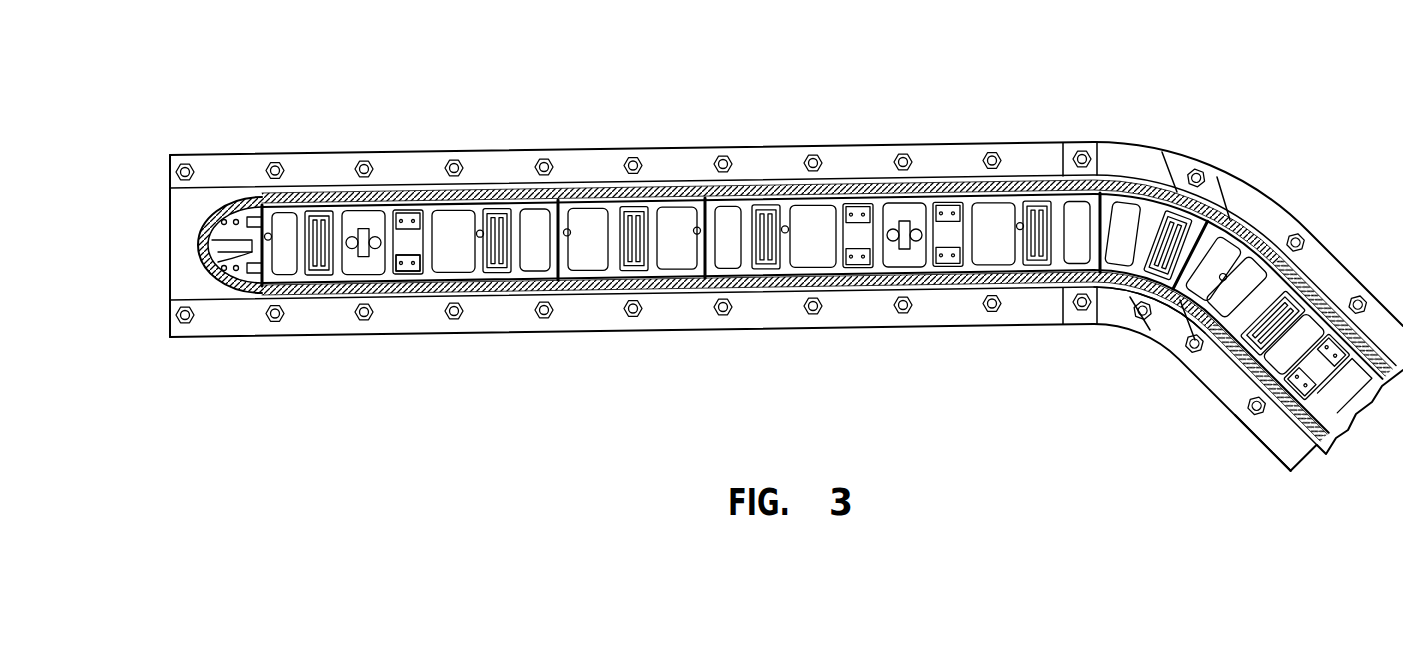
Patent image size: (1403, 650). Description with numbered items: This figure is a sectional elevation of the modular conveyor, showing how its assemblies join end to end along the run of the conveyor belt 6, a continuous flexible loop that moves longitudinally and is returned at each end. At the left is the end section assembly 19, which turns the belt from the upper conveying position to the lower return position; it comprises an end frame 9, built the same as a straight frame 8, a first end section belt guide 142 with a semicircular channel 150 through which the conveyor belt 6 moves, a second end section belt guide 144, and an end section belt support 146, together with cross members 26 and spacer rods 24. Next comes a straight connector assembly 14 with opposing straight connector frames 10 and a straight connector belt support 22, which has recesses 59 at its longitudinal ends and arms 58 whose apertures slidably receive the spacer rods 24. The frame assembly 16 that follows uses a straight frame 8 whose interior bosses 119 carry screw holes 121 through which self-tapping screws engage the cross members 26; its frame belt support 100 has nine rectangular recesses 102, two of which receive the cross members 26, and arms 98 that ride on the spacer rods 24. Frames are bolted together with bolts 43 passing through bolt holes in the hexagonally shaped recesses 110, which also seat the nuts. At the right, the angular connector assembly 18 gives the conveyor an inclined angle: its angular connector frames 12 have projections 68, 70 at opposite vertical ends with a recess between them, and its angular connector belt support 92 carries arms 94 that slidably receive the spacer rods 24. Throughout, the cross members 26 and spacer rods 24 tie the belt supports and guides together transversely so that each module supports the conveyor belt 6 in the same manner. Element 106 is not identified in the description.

The angular connector frame 12 is at (1140, 152).
The straight frame 8 is at (853, 143).
The straight connector frame 10 is at (682, 172).
The end frame 9 is at (213, 320).
The end section assembly 19 is at (274, 348).
The angular connector assembly 18 is at (1272, 185).
The frame assembly 16 is at (930, 338).
The conveyor belt 6 is at (448, 200).
The frame belt support 100 is at (932, 198).
The spacer rod 24 is at (210, 276).
The first end section belt guide 142 is at (216, 196).
The semicircular channel 150 is at (198, 243).
The bolt 43 is at (540, 152).
The hexagonally shaped recess 110 is at (453, 158).
The projection 68 is at (1128, 150).
The arm 94 is at (1140, 178).
The projection 70 is at (1145, 330).
The angular connector belt support 92 is at (1172, 332).
The second end section belt guide 144 is at (323, 204).
The straight connector belt support 22 is at (562, 200).
The straight connector assembly 14 is at (640, 342).
The end section belt support 146 is at (291, 196).
The cross member 26 is at (638, 210).
The screw hole 121 is at (404, 212).
The boss 119 is at (403, 262).
The arm 58 is at (590, 268).
The recess 59 is at (610, 272).
The rectangular recess 102 is at (736, 258).
The arm 98 is at (823, 260).
The curved section module 106 is at (1122, 264).